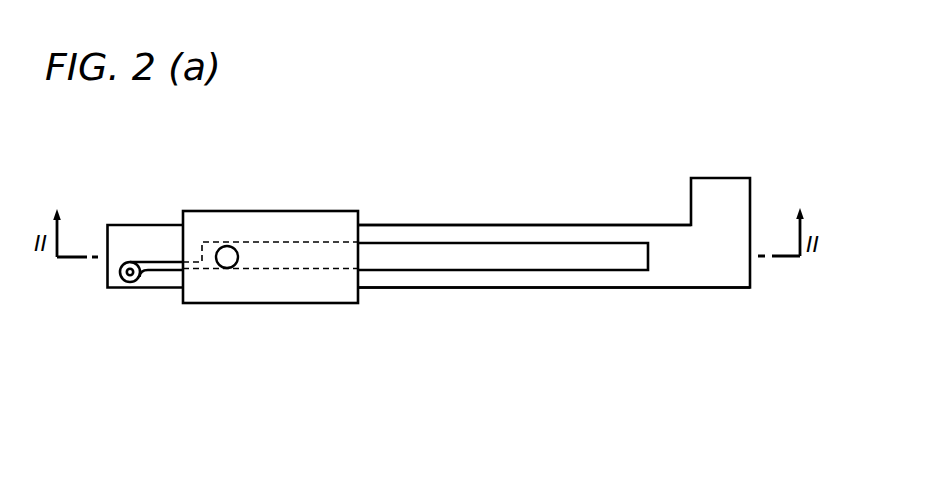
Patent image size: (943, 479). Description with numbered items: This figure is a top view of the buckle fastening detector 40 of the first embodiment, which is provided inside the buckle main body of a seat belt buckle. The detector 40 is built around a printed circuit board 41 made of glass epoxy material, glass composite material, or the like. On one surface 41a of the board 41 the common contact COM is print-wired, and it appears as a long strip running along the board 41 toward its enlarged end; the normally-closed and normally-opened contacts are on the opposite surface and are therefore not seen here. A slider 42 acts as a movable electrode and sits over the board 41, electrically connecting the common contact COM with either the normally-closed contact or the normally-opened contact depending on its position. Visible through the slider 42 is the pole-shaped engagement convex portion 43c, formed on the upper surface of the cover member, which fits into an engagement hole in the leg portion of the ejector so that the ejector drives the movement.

The buckle fastening detector 40 is at (105, 193).
The printed circuit board 41 is at (719, 175).
The one surface of the board 41a is at (682, 272).
The slider 42 is at (306, 206).
The engagement convex portion 43c is at (228, 255).
The common contact COM is at (512, 257).